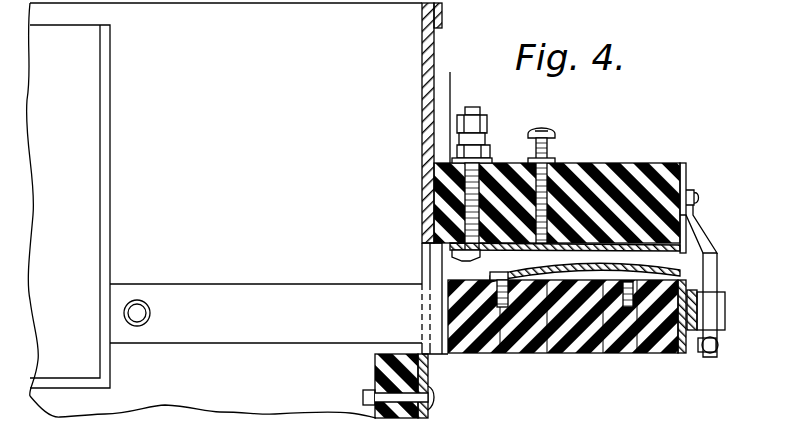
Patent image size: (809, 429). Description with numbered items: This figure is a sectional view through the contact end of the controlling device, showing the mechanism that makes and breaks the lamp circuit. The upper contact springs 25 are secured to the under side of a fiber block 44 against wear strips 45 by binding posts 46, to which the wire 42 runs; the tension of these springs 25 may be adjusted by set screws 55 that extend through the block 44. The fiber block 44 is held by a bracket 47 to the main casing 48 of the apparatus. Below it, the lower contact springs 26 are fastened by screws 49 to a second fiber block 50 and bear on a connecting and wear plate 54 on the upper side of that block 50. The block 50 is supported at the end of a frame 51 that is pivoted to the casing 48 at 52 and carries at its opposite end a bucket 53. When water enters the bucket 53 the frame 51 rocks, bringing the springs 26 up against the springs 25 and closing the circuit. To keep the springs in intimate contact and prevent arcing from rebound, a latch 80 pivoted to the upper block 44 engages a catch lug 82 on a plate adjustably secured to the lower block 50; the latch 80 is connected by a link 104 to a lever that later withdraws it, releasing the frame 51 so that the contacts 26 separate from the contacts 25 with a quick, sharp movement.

The contact springs 25 is at (617, 212).
The contact springs 26 is at (548, 353).
The wire 42 is at (451, 85).
The fiber block 44 is at (656, 180).
The wear strips 45 is at (681, 241).
The binding posts 46 is at (481, 132).
The bracket 47 is at (435, 257).
The main casing 48 is at (423, 242).
The screws 49 is at (500, 364).
The fiber block 50 is at (640, 332).
The frame 51 is at (226, 298).
The pivot 52 is at (141, 300).
The bucket 53 is at (72, 190).
The connecting and wear plate 54 is at (598, 353).
The set screws 55 is at (549, 151).
The latch 80 is at (712, 270).
The catch lug 82 is at (720, 318).
The link 104 is at (713, 352).